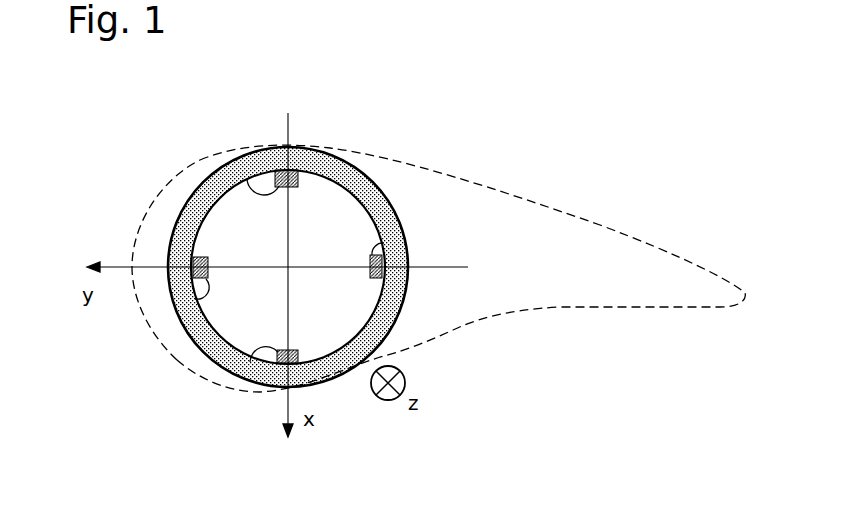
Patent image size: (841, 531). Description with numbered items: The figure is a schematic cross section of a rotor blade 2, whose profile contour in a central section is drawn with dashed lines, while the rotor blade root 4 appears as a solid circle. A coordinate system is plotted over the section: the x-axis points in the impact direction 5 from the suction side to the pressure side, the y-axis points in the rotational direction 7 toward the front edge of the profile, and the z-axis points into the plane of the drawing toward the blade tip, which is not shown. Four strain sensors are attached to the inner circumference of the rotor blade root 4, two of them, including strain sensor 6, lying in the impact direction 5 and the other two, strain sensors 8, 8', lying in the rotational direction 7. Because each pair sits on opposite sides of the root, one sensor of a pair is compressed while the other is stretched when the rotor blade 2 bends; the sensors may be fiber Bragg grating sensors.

The rotor blade 2 is at (580, 210).
The rotor blade root 4 is at (400, 212).
The impact direction 5 is at (282, 402).
The strain sensor 6 is at (233, 151).
The rotational direction 7 is at (117, 263).
The strain sensor 8 is at (199, 310).
The strain sensor 8' is at (366, 198).